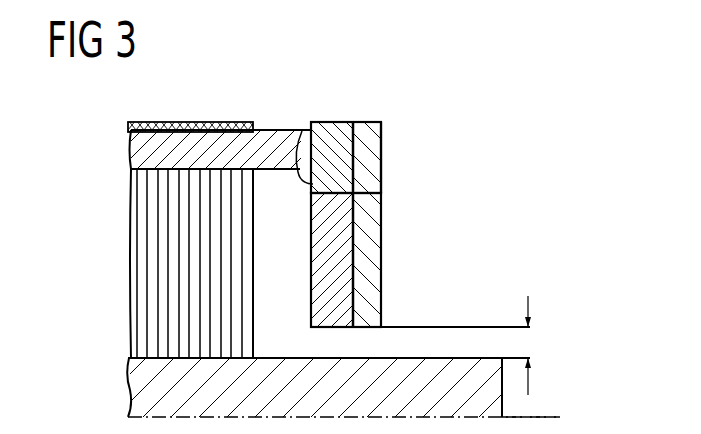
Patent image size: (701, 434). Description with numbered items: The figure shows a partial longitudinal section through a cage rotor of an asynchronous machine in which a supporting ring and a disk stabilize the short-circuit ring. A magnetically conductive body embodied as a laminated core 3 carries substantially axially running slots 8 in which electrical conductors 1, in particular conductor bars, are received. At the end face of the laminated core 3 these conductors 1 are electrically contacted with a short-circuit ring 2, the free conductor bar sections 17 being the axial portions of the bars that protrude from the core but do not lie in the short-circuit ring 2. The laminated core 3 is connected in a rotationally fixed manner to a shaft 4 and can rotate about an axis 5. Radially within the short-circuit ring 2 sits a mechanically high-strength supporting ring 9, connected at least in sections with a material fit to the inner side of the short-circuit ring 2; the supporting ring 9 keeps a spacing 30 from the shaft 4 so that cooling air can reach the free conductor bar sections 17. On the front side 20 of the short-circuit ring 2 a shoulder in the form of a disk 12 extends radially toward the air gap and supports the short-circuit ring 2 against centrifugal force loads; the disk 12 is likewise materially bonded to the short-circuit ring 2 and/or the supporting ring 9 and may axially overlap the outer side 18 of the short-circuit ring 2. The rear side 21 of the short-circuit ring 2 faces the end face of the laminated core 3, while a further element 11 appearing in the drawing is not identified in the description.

The electrical conductors 1 is at (130, 147).
The short-circuit ring 2 is at (371, 157).
The laminated core 3 is at (130, 210).
The shaft 4 is at (130, 388).
The axis 5 is at (548, 417).
The slots 8 is at (196, 121).
The supporting ring 9 is at (340, 317).
The side wall 11 is at (356, 202).
The disk 12 is at (372, 233).
The free conductor bar sections 17 is at (268, 130).
The outer side of the short-circuit ring 18 is at (334, 122).
The front side of the short-circuit ring 20 is at (358, 143).
The rear side of the short-circuit ring 21 is at (303, 130).
The spacing 30 is at (530, 343).